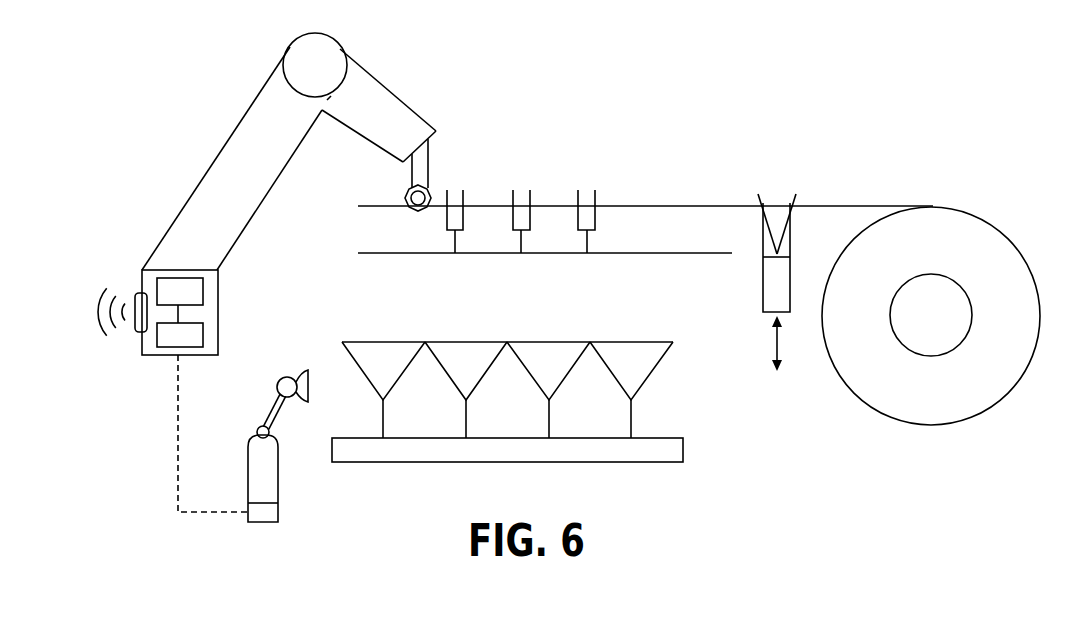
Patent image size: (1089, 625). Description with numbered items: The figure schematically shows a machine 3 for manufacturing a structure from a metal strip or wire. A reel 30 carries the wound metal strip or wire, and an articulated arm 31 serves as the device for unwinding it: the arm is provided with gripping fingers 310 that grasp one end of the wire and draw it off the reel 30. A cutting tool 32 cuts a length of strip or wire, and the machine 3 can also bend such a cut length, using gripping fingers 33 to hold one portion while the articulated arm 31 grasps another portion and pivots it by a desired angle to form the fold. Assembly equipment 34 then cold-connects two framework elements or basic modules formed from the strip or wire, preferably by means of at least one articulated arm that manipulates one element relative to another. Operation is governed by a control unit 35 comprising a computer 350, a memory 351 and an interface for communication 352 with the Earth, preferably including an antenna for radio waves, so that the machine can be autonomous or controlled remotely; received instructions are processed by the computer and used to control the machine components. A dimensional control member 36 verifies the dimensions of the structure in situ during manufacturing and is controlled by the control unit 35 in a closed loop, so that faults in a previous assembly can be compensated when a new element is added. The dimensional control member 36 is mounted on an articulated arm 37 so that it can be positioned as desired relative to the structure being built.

The machine 3 is at (770, 71).
The reel 30 is at (997, 228).
The articulated arm 31 is at (203, 172).
The gripping fingers 310 is at (432, 190).
The cutting tool 32 is at (762, 248).
The gripping fingers 33 is at (521, 195).
The assembly equipment 34 is at (619, 480).
The control unit 35 is at (158, 357).
The computer 350 is at (158, 300).
The memory 351 is at (193, 350).
The interface for communication 352 is at (137, 328).
The dimensional control member 36 is at (287, 376).
The articulated arm 37 is at (279, 492).